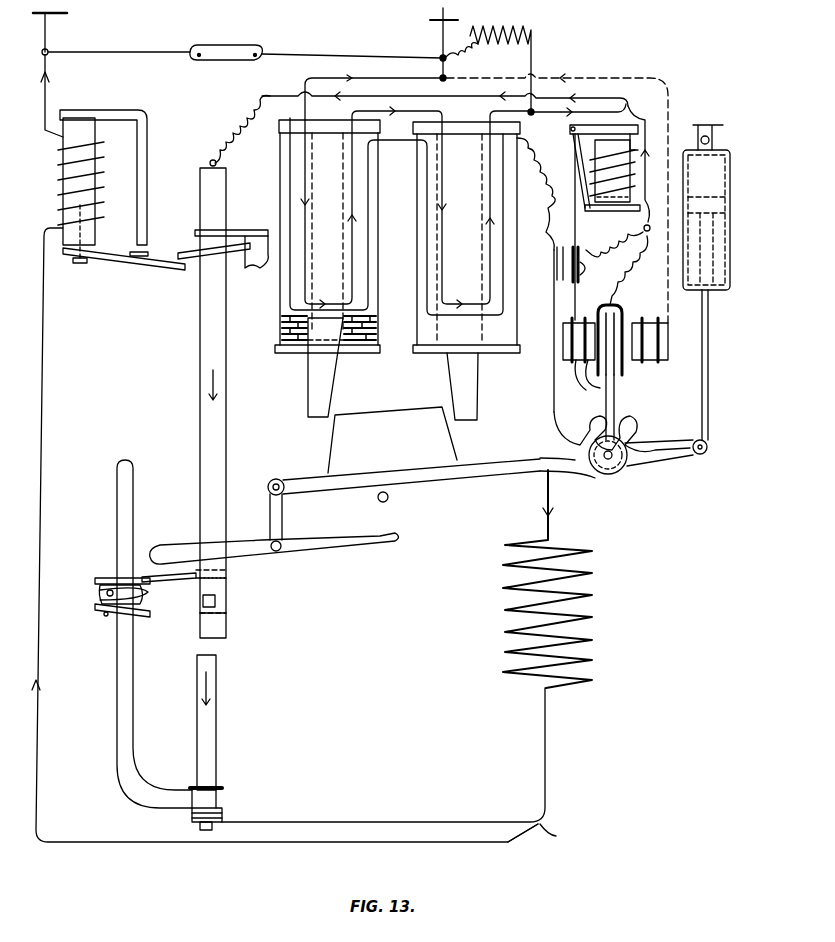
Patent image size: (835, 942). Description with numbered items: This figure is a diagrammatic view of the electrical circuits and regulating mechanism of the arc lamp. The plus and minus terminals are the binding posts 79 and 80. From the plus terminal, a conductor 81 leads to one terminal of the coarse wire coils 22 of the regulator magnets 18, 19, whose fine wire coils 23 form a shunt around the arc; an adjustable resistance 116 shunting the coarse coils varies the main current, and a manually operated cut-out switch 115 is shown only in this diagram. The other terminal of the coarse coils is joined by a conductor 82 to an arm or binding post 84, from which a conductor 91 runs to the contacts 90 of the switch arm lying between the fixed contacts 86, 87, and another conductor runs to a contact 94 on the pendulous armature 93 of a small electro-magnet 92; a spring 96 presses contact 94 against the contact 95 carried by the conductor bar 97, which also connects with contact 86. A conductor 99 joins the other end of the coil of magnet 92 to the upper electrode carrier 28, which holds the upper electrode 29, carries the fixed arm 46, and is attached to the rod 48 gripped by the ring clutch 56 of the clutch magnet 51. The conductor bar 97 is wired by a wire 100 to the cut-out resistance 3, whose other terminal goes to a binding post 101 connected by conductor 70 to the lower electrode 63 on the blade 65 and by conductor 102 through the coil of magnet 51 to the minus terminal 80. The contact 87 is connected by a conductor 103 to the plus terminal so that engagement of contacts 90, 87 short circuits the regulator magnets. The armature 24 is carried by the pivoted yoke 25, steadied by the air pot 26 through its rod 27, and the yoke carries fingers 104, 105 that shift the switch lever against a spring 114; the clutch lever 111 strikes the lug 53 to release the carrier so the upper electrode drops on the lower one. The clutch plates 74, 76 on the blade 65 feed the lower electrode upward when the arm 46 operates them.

The resistance coils 3 is at (541, 579).
The regulator magnet 18 is at (389, 235).
The regulator magnet 19 is at (484, 237).
The coarse wire coils 22 is at (378, 323).
The fine wire coils 23 is at (370, 340).
The armature 24 is at (392, 440).
The armature yoke 25 is at (504, 470).
The air pot 26 is at (720, 207).
The rod 27 is at (708, 370).
The upper electrode carrier 28 is at (225, 399).
The upper metallic electrode 29 is at (226, 630).
The fixed arm 46 is at (183, 584).
The rod 48 is at (614, 237).
The clutch magnet 51 is at (284, 476).
The lug 53 is at (395, 497).
The ring clutch 56 is at (216, 249).
The lower electrode 63 is at (216, 735).
The blade 65 is at (154, 634).
The conductor 70 is at (383, 755).
The lower clutch plate 74 is at (128, 621).
The upper clutch plate 76 is at (115, 582).
The plus terminal binding post 79 is at (438, 44).
The minus terminal binding post 80 is at (52, 32).
The conductor 81 is at (486, 191).
The conductor 82 is at (595, 156).
The arm or binding post 84 is at (650, 231).
The contact 86 is at (579, 381).
The contact 87 is at (645, 360).
The contacts 90 is at (598, 322).
The conductor 91 is at (629, 270).
The electro-magnet 92 is at (605, 168).
The pendulous armature 93 is at (566, 178).
The contact 94 is at (584, 268).
The contact 95 is at (557, 268).
The spring 96 is at (580, 190).
The conductor bar or bracket 97 is at (554, 302).
The conductor 99 is at (445, 92).
The wire 100 is at (554, 420).
The binding post 101 is at (561, 833).
The conductor 102 is at (459, 843).
The conductor 103 is at (668, 305).
The finger 104 is at (640, 424).
The finger 105 is at (578, 412).
The clutch lever 111 is at (274, 548).
The spring 114 is at (598, 407).
The cut-out switch 115 is at (220, 60).
The adjustable resistance 116 is at (488, 57).